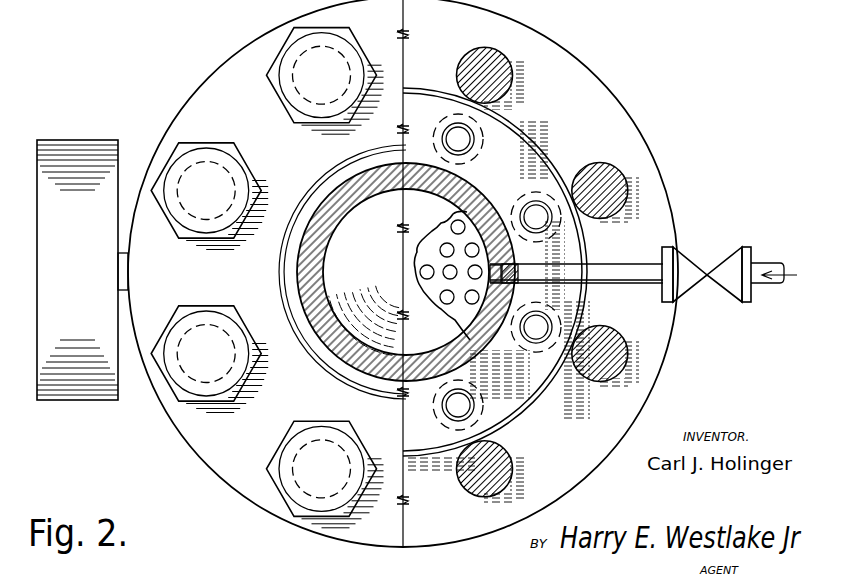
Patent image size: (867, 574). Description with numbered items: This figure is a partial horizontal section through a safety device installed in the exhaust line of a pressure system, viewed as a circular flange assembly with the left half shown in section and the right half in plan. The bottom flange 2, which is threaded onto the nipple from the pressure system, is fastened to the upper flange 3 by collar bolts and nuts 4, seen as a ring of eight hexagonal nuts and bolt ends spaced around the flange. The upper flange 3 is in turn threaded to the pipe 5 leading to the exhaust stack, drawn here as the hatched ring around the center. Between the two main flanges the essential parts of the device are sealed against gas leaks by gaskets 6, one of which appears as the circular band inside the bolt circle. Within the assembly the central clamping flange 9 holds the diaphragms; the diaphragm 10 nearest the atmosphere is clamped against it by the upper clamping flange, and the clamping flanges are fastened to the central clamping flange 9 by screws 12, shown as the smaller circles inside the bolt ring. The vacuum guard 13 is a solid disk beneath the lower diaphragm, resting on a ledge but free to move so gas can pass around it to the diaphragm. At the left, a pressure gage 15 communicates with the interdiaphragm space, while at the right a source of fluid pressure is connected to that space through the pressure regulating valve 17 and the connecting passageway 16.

The bottom flange 2 is at (575, 52).
The upper flange 3 is at (263, 30).
The collar bolts and nuts 4 is at (268, 63).
The pipe 5 is at (340, 225).
The gaskets 6 is at (518, 128).
The central clamping flange 9 is at (466, 210).
The diaphragm 10 is at (333, 270).
The screws 12 is at (534, 212).
The vacuum guard 13 is at (461, 300).
The pressure gage 15 is at (73, 140).
The connecting passageway 16 is at (645, 262).
The pressure regulating valve 17 is at (728, 247).